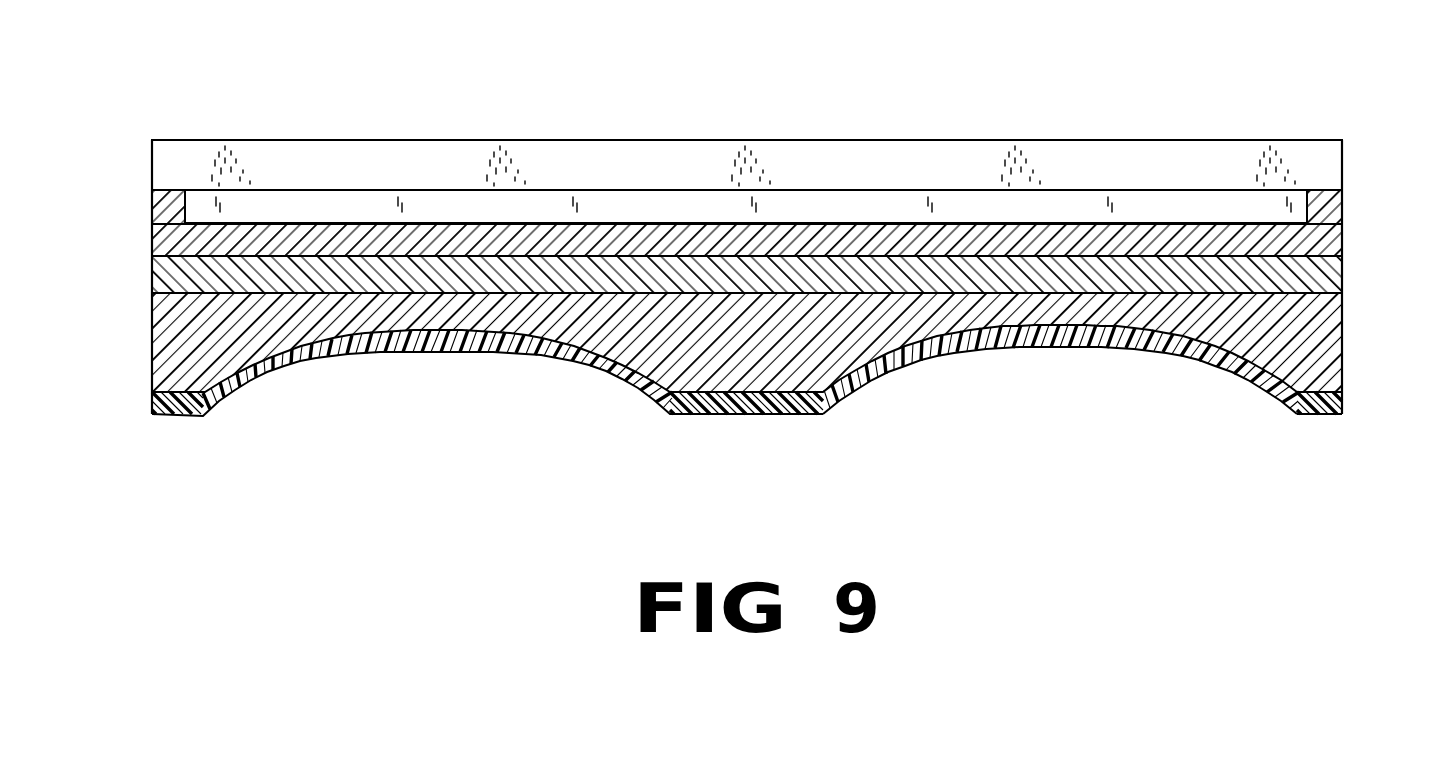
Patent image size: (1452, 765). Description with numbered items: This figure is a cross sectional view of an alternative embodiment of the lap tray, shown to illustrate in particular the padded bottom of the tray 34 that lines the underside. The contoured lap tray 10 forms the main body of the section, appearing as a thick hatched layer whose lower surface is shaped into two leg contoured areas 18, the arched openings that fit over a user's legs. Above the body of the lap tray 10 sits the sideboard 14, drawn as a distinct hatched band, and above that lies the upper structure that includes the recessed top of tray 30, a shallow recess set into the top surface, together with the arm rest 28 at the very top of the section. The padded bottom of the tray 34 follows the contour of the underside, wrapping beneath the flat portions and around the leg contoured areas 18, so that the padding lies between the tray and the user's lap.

The contoured lap tray 10 is at (1343, 328).
The sideboard 14 is at (1343, 272).
The leg contoured areas 18 is at (1153, 362).
The arm rest 28 is at (800, 157).
The recessed top of tray 30 is at (1042, 207).
The padded bottom of the tray 34 is at (782, 406).